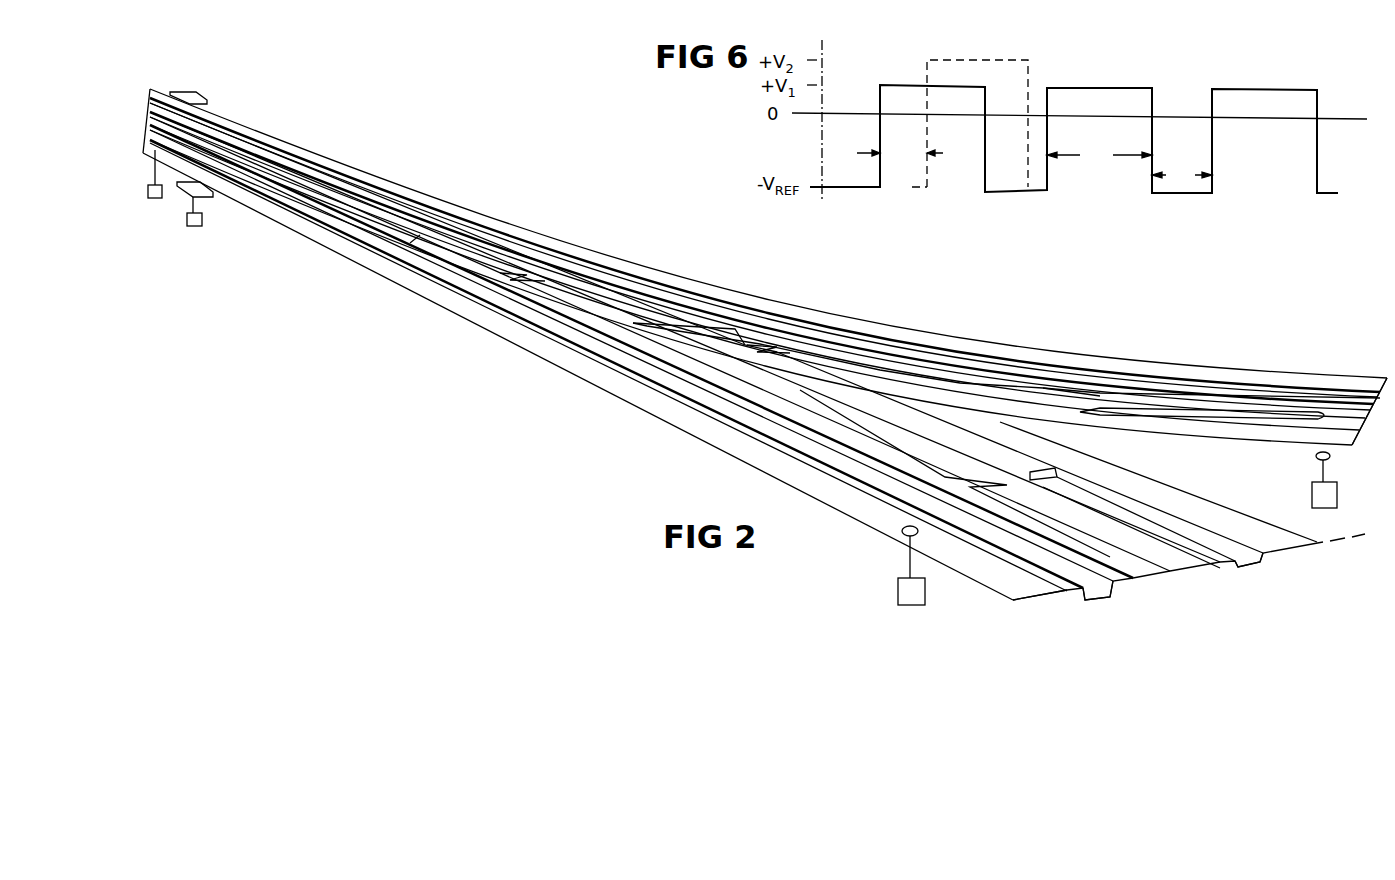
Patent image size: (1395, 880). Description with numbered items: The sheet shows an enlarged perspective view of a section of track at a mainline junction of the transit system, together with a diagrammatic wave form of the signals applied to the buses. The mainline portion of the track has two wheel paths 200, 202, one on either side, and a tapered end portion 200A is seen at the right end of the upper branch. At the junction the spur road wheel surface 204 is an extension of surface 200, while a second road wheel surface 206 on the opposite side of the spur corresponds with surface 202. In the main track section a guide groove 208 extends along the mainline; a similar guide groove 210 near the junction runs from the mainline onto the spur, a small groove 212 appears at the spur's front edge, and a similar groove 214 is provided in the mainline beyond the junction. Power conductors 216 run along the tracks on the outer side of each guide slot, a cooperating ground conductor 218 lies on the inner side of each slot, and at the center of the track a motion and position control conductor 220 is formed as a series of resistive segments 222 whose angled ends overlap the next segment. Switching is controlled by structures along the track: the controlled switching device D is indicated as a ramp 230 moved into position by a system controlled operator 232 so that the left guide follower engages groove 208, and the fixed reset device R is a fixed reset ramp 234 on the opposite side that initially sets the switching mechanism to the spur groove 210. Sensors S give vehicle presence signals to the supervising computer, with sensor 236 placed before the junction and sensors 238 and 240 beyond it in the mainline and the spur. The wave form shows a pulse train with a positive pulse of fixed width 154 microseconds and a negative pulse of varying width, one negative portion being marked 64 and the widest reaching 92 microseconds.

In FIG. 2, the wheel path 200 is at (303, 228).
In FIG. 2, the substrate end portion 200A is at (1343, 457).
In FIG. 2, the wheel path 202 is at (1305, 382).
In FIG. 2, the spur road wheel surface 204 is at (1020, 596).
In FIG. 2, the second road wheel surface 206 is at (1220, 445).
In FIG. 2, the guide groove 208 is at (1360, 393).
In FIG. 2, the guide groove 210 is at (1093, 596).
In FIG. 2, the groove 212 is at (1257, 563).
In FIG. 2, the groove 214 is at (1193, 427).
In FIG. 2, the power conductors 216 is at (368, 252).
In FIG. 2, the ground conductor 218 is at (572, 287).
In FIG. 2, the motion and position control conductor 220 is at (882, 372).
In FIG. 2, the segments 222 is at (1023, 502).
In FIG. 2, the ramp 230 is at (207, 197).
In FIG. 2, the system controlled operator 232 is at (193, 226).
In FIG. 2, the fixed reset ramp 234 is at (205, 95).
In FIG. 2, the sensor 236 is at (157, 199).
In FIG. 2, the sensor 238 is at (898, 588).
In FIG. 2, the sensor 240 is at (1312, 500).
In FIG. 2, the fixed reset device R is at (190, 90).
In FIG. 2, the sensor S is at (153, 200).
In FIG. 2, the controlled switching device D is at (205, 197).
In FIG. 6, the pulse width 64 is at (900, 155).
In FIG. 6, the positive pulse width 154 is at (1099, 156).
In FIG. 6, the negative pulse width 92 is at (1182, 176).